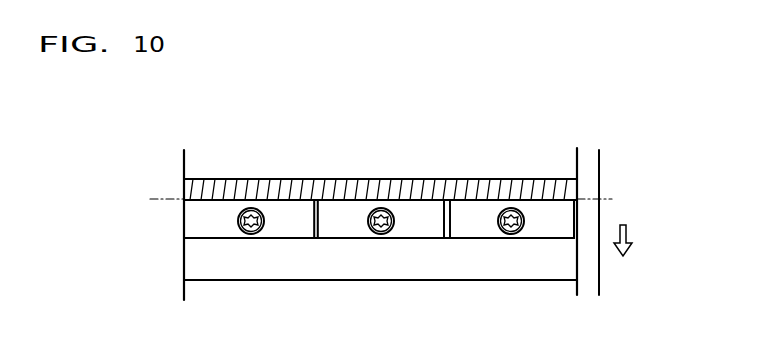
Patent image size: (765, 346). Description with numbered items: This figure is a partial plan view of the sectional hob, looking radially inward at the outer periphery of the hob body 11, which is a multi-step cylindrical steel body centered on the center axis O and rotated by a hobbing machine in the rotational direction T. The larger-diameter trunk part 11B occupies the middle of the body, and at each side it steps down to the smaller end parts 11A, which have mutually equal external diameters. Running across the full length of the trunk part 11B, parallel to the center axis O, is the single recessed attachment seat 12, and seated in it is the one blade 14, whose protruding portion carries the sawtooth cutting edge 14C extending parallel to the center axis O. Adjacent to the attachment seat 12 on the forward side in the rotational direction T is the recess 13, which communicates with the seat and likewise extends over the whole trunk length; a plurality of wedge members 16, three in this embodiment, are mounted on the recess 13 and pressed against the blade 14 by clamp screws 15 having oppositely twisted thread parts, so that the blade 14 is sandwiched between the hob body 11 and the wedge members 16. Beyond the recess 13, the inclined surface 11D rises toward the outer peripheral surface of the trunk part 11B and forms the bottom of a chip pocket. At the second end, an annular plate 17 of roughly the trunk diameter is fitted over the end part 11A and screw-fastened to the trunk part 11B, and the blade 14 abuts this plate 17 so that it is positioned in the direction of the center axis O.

The hob body 11 is at (455, 124).
The end part 11A is at (173, 187).
The trunk part 11B is at (567, 165).
The inclined surface 11D is at (527, 268).
The attachment seat 12 is at (348, 163).
The recess 13 is at (325, 250).
The blade 14 is at (497, 187).
The cutting edge 14C is at (460, 202).
The clamp screw 15 is at (253, 235).
The wedge member 16 is at (283, 225).
The plate 17 is at (590, 272).
The center axis O is at (607, 196).
The rotational direction T is at (632, 240).